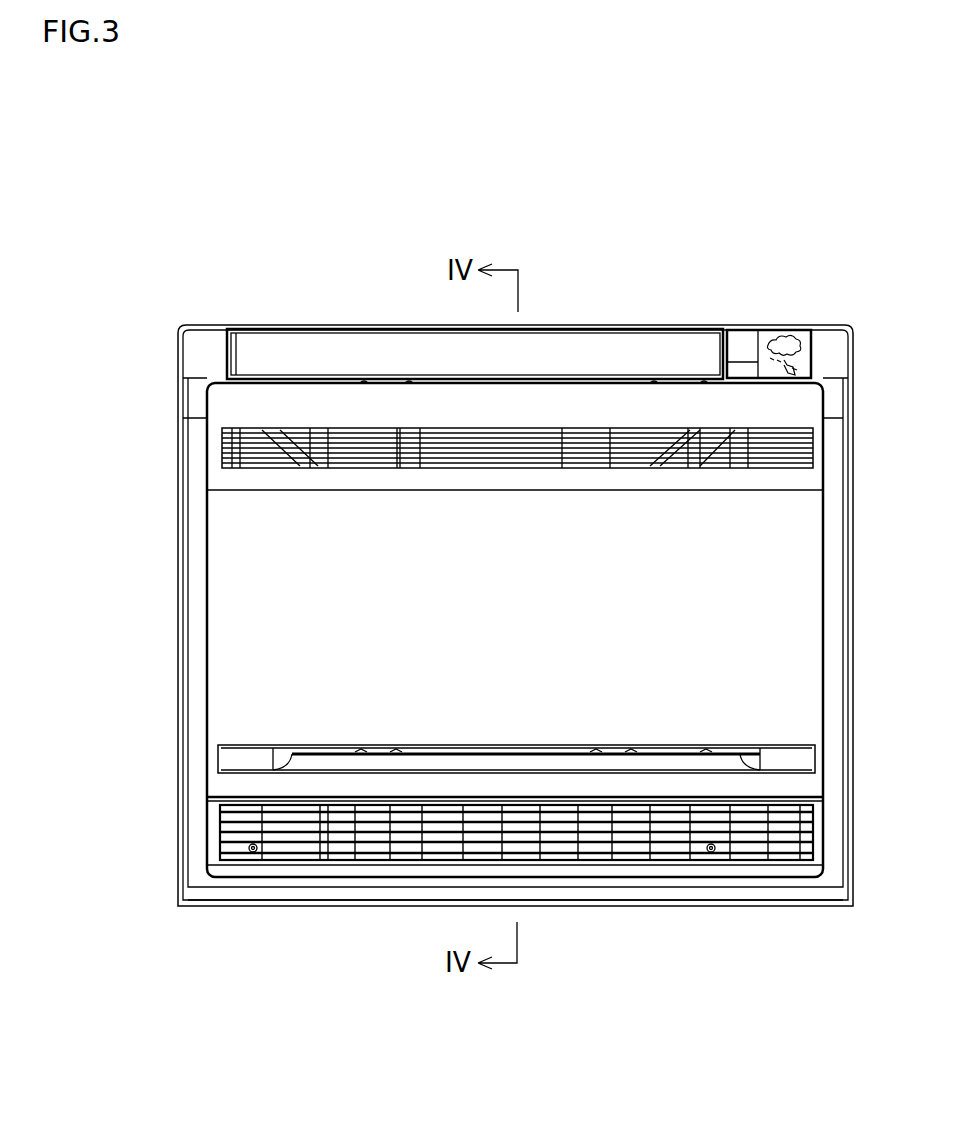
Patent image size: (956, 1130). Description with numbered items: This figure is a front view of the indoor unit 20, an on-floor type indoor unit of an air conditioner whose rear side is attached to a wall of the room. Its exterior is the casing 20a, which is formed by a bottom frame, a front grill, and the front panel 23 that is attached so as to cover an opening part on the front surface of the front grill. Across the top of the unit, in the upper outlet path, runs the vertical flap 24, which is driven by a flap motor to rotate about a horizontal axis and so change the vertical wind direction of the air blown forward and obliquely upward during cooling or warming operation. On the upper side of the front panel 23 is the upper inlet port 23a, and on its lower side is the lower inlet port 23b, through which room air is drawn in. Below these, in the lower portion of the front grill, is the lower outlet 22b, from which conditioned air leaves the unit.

The indoor unit 20 is at (153, 245).
The casing 20a is at (166, 698).
The vertical flap 24 is at (325, 350).
The front panel 23 is at (240, 612).
The upper inlet port 23a is at (225, 443).
The lower inlet port 23b is at (218, 755).
The lower outlet 22b is at (222, 830).